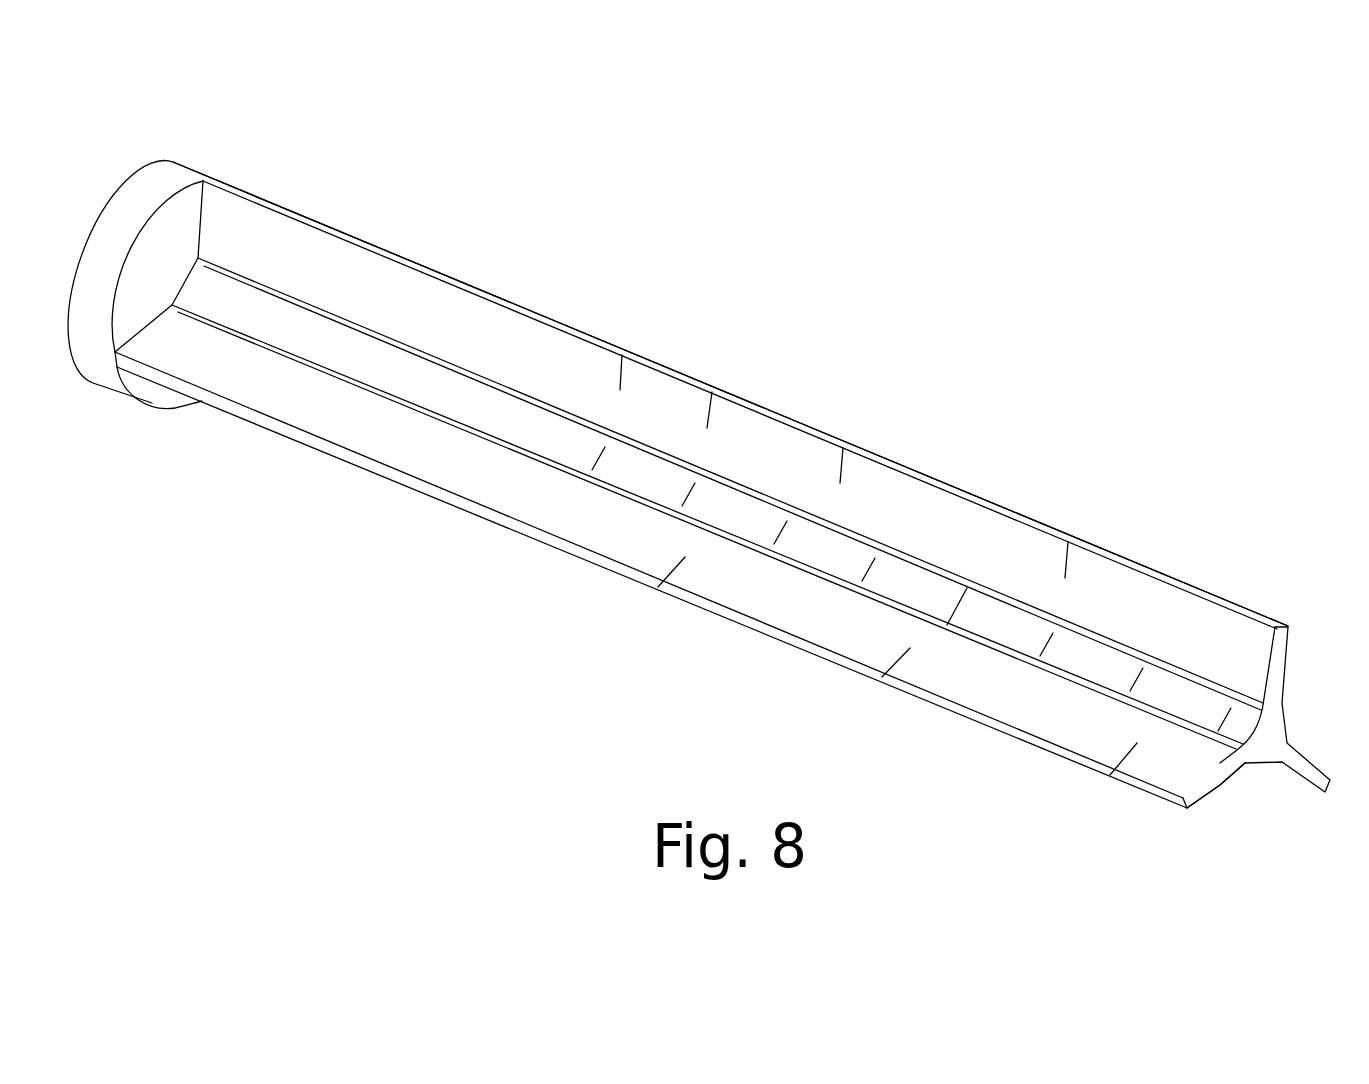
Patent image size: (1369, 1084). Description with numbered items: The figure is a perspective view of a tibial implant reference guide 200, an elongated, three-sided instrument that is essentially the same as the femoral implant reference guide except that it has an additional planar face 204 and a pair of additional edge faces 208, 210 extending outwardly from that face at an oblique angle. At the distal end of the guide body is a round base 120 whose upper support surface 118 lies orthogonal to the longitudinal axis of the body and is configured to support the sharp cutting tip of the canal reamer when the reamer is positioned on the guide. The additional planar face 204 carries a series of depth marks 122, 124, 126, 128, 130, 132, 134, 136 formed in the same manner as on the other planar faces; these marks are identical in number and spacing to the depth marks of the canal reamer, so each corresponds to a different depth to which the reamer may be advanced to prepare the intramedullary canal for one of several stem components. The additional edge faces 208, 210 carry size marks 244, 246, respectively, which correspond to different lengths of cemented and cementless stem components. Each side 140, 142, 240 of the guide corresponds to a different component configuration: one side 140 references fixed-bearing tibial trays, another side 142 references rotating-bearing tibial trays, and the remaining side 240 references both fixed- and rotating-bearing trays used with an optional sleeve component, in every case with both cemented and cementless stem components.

The upper support surface 118 is at (177, 226).
The round base 120 is at (185, 203).
The depth mark 122 is at (592, 470).
The depth mark 124 is at (682, 506).
The depth mark 126 is at (774, 544).
The depth mark 128 is at (862, 581).
The depth mark 130 is at (947, 625).
The depth mark 132 is at (1040, 656).
The depth mark 134 is at (1130, 691).
The depth mark 136 is at (1218, 731).
The side 140 is at (1285, 715).
The side 142 is at (1253, 765).
The tibial implant reference guide 200 is at (992, 314).
The additional planar face 204 is at (430, 387).
The additional edge face 208 is at (257, 213).
The additional edge face 210 is at (170, 353).
The side 240 is at (473, 303).
The size marks 244 is at (624, 362).
The size marks 246 is at (658, 587).